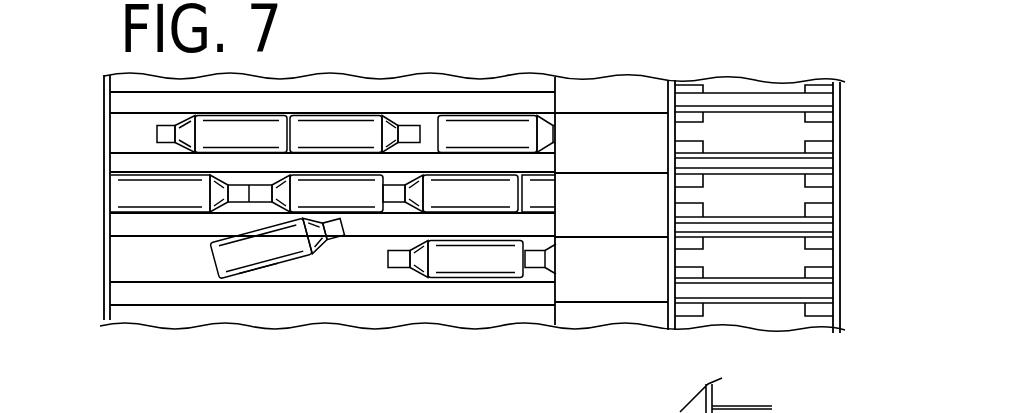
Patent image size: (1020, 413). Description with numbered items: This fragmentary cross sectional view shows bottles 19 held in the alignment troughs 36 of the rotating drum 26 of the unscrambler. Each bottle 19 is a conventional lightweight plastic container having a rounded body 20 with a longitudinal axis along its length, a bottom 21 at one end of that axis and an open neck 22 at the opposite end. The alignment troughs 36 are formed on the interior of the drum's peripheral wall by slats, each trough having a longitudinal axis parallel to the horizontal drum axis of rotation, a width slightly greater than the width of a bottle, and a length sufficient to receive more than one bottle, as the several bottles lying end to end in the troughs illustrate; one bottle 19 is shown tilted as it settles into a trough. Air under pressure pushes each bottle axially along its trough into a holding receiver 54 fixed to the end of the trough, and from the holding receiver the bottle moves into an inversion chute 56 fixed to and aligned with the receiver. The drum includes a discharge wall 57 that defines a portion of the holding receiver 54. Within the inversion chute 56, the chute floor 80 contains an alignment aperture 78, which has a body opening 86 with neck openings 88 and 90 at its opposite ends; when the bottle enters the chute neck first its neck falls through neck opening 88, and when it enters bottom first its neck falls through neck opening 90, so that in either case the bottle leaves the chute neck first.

The bottles 19 is at (259, 276).
The rounded body 20 is at (277, 250).
The bottom 21 is at (290, 302).
The open neck 22 is at (342, 245).
The drum 26 is at (96, 243).
The alignment troughs 36 is at (142, 263).
The holding receiver 54 is at (588, 330).
The inversion chute 56 is at (778, 277).
The discharge wall 57 is at (667, 102).
The alignment aperture 78 is at (757, 97).
The chute floor 80 is at (820, 122).
The body opening 86 is at (775, 130).
The neck opening 88 is at (820, 133).
The neck opening 90 is at (683, 132).